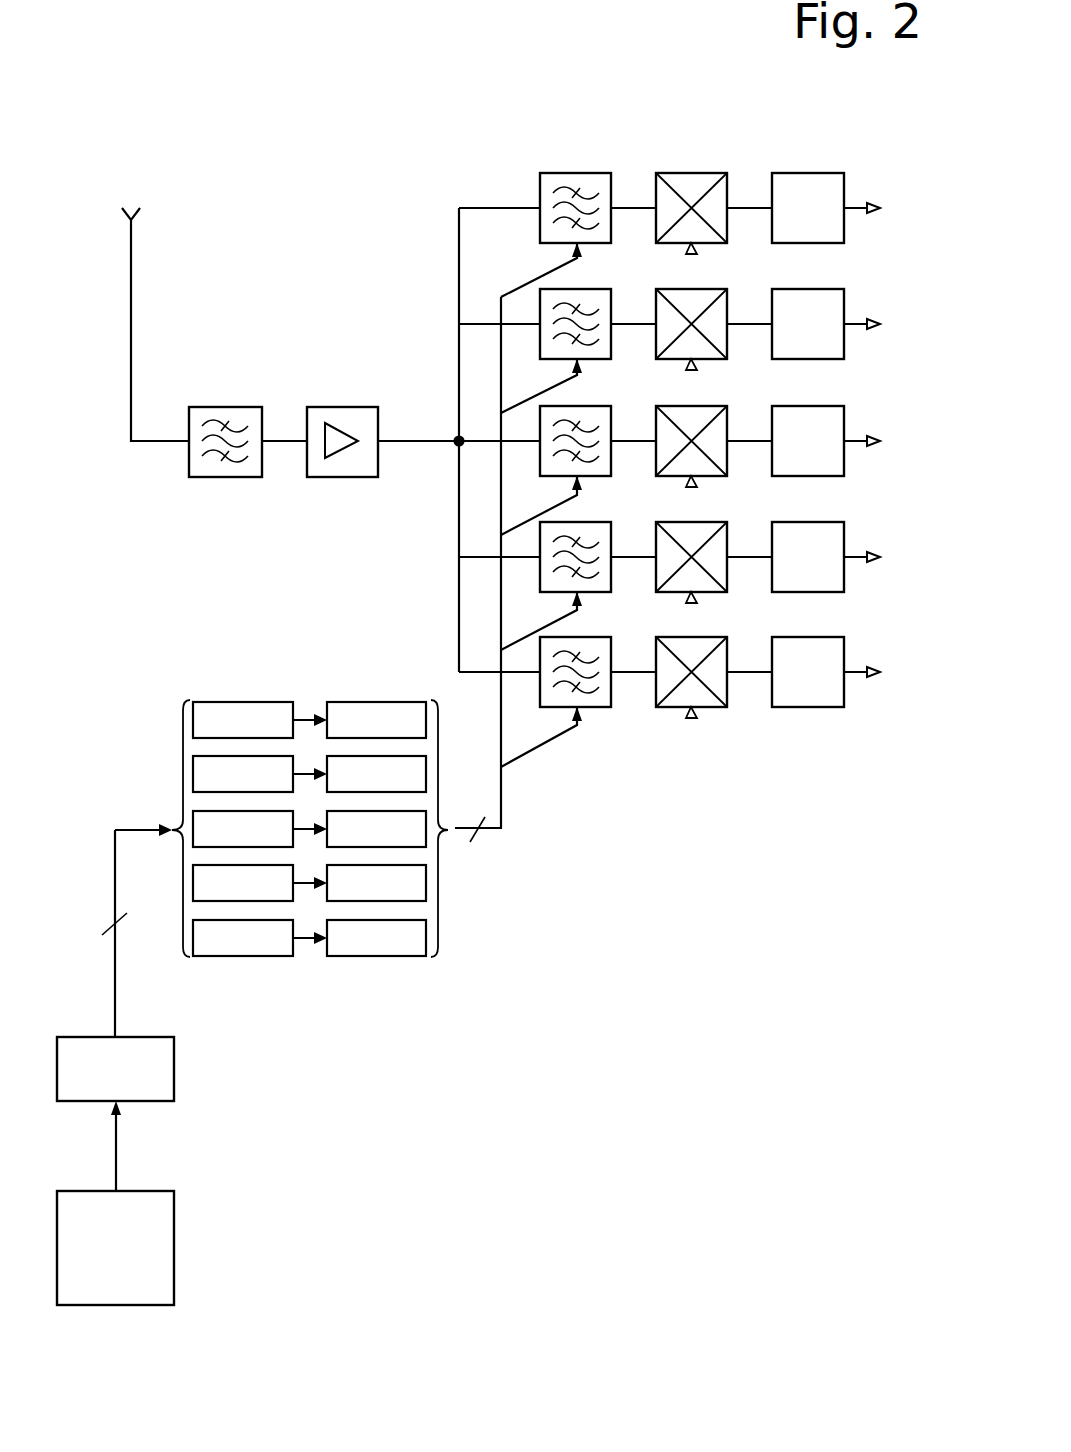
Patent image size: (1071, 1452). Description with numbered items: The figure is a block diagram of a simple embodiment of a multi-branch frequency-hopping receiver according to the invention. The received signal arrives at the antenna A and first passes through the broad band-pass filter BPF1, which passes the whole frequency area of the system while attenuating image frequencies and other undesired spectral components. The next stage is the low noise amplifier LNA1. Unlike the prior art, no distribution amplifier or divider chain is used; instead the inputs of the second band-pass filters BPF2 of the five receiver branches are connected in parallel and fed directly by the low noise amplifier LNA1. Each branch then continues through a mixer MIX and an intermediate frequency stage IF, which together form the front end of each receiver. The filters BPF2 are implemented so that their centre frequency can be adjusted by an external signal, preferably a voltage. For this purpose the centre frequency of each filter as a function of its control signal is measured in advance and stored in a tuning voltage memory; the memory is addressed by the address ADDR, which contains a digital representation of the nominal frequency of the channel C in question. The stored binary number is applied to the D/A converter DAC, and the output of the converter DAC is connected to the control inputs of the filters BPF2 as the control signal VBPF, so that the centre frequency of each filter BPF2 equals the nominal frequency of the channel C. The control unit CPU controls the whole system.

The antenna A is at (133, 270).
The broad band-pass filter BPF1 is at (225, 405).
The low noise amplifier LNA1 is at (340, 405).
The second band-pass filter BPF2 is at (576, 172).
The mixer MIX is at (690, 172).
The intermediate frequency stage IF is at (808, 172).
The D/A converter DAC is at (360, 700).
The address ADDR is at (108, 823).
The control signal VBPF is at (505, 832).
The channel C is at (116, 1153).
The control unit CPU is at (177, 1187).